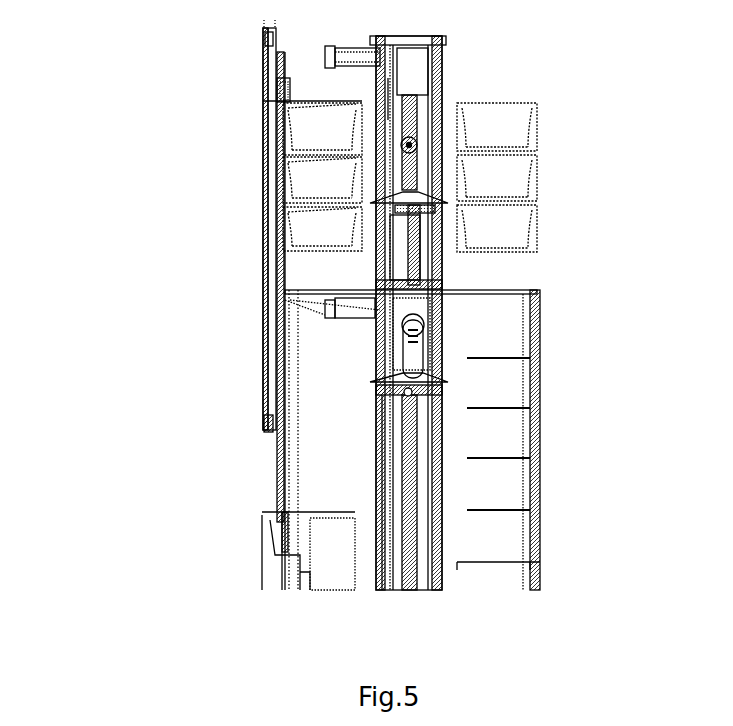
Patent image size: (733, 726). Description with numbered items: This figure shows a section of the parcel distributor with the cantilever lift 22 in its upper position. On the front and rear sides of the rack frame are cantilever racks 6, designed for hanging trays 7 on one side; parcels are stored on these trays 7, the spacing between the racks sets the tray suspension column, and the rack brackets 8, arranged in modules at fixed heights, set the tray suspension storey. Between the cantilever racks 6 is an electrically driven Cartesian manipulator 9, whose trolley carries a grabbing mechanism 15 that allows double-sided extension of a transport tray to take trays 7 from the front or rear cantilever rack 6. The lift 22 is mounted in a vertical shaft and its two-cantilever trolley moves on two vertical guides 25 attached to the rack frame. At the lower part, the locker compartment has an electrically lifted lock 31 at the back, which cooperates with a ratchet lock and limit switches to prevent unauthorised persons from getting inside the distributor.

The cantilever rack 6 is at (532, 492).
The tray 7 is at (500, 188).
The rack bracket 8 is at (500, 458).
The Cartesian manipulator 9 is at (435, 82).
The grabbing mechanism 15 is at (412, 345).
The cantilever lift 22 is at (252, 151).
The vertical guide 25 is at (265, 308).
The electrically lifted lock 31 is at (327, 543).